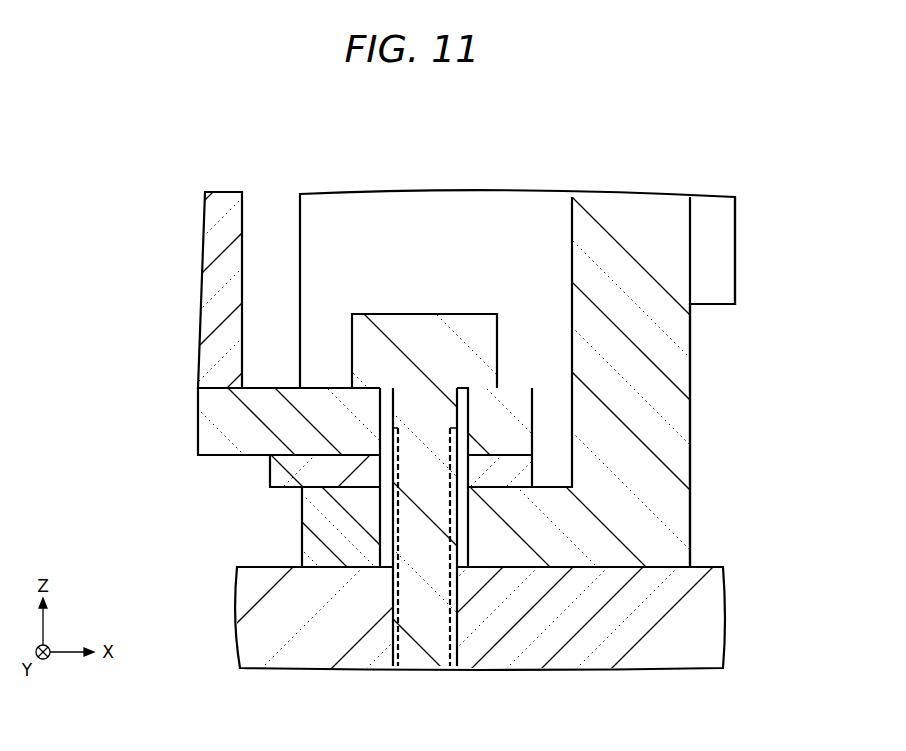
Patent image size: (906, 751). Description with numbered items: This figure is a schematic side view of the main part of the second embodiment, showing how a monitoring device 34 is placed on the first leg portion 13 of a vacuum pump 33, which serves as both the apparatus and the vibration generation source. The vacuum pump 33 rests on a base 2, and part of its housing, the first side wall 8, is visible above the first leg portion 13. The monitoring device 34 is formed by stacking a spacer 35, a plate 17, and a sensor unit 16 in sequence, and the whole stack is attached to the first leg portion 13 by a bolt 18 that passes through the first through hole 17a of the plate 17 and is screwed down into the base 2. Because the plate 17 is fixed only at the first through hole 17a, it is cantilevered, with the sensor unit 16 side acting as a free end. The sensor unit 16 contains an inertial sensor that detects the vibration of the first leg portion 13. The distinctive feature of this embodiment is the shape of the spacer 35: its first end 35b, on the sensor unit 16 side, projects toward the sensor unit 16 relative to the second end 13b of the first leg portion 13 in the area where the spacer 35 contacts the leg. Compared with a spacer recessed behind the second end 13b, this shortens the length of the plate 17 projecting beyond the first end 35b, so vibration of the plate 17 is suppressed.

The base 2 is at (722, 626).
The first side wall 8 is at (722, 250).
The first leg portion 13 is at (690, 509).
The second end 13b is at (300, 541).
The sensor unit 16 is at (208, 290).
The plate 17 is at (206, 428).
The first through hole 17a is at (391, 403).
The bolt 18 is at (469, 327).
The vacuum pump 33 is at (453, 350).
The monitoring device 34 is at (412, 350).
The spacer 35 is at (412, 350).
The first end 35b is at (270, 470).